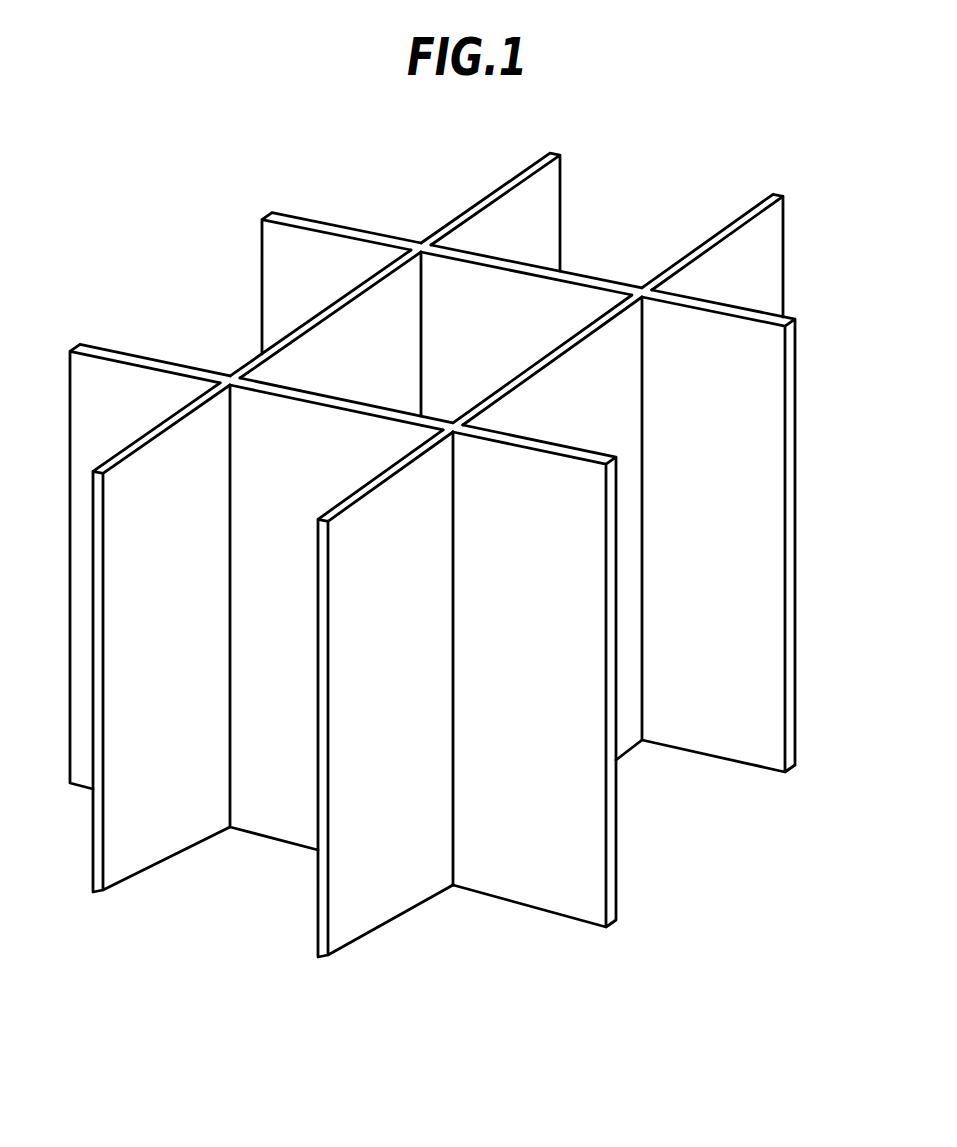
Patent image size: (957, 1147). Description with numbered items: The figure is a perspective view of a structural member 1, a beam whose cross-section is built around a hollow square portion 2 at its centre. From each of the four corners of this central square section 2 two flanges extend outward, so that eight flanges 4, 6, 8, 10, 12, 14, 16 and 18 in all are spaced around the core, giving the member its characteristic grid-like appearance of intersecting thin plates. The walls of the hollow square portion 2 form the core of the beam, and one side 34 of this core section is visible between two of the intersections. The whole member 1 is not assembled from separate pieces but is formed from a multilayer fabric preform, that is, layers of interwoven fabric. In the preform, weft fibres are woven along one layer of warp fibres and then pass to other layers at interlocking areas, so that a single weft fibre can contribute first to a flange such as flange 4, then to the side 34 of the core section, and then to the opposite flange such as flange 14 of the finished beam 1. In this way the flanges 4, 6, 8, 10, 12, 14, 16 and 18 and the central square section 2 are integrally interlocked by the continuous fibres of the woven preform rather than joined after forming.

The structural member 1 is at (418, 233).
The hollow square portion 2 is at (390, 370).
The flange 4 is at (507, 193).
The flange 6 is at (740, 233).
The flange 8 is at (740, 316).
The flange 10 is at (570, 446).
The flange 12 is at (362, 493).
The flange 14 is at (117, 457).
The flange 16 is at (155, 365).
The flange 18 is at (326, 230).
The side of the core section 34 is at (320, 317).